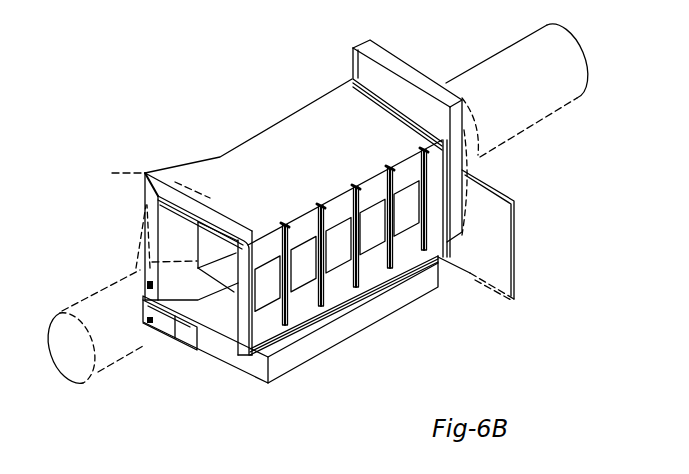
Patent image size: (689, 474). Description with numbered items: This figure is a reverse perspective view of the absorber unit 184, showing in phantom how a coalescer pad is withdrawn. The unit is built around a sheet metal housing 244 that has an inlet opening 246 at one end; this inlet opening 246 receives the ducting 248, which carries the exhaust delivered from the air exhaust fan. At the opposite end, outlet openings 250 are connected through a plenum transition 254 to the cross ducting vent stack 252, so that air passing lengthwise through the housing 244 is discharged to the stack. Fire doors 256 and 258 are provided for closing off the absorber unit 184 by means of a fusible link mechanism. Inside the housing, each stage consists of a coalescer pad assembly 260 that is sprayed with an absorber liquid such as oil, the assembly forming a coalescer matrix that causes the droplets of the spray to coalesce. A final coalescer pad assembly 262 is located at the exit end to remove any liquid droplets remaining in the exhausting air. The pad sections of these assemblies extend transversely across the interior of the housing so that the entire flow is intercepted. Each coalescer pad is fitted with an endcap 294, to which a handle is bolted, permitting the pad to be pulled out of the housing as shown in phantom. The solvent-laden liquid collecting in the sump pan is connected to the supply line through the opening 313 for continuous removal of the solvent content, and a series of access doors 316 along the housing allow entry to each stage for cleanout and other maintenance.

The absorber unit 184 is at (216, 150).
The sheet metal housing 244 is at (192, 178).
The inlet opening 246 is at (157, 213).
The ducting 248 is at (100, 380).
The outlet openings 250 is at (352, 62).
The cross ducting vent stack 252 is at (492, 62).
The plenum transition 254 is at (480, 157).
The fire door 256 is at (141, 220).
The fire door 258 is at (354, 46).
The coalescer pad assembly 260 is at (285, 226).
The final coalescer pad assembly 262 is at (517, 240).
The endcap 294 is at (321, 205).
The opening 313 is at (144, 330).
The access doors 316 is at (403, 236).